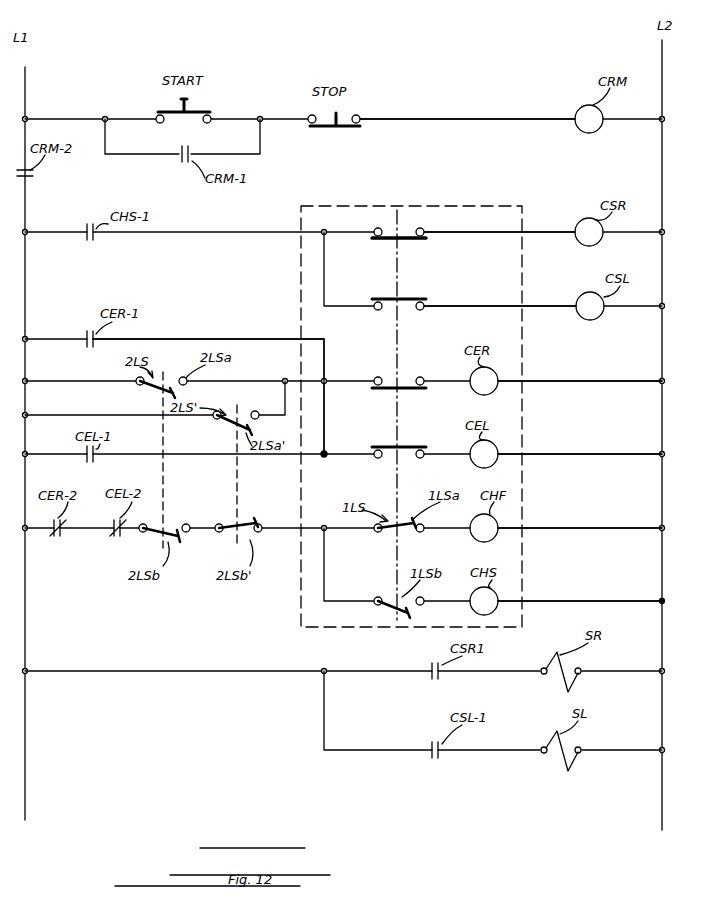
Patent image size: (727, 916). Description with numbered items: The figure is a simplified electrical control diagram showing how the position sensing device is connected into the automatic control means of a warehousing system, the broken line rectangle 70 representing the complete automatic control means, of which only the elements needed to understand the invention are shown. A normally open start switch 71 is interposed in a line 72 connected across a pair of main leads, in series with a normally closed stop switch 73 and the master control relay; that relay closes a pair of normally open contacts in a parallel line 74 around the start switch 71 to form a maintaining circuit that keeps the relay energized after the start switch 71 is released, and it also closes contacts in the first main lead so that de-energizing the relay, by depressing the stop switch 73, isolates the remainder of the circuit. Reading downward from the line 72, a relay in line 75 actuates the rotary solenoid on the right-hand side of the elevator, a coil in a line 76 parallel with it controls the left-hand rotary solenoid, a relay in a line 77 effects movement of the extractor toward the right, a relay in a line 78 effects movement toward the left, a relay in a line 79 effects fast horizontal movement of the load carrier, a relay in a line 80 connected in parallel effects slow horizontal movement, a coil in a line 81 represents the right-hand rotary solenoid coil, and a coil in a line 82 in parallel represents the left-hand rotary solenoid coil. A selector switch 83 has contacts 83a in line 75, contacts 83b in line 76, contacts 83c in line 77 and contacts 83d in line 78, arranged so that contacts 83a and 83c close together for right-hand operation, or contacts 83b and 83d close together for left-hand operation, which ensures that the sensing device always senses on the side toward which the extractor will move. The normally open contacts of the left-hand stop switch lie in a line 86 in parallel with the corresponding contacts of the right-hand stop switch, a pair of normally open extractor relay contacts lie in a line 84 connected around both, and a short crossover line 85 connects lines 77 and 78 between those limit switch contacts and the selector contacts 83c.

The broken line rectangle 70 is at (449, 206).
The start switch 71 is at (186, 104).
The line 72 is at (484, 108).
The stop switch 73 is at (338, 112).
The parallel line 74 is at (124, 155).
The line 75 is at (476, 232).
The line 76 is at (480, 306).
The line 77 is at (597, 381).
The line 78 is at (597, 454).
The line 79 is at (597, 528).
The line 80 is at (594, 601).
The line 81 is at (620, 671).
The line 82 is at (620, 750).
The selector switch 83 is at (381, 230).
The contacts 83a is at (412, 240).
The contacts 83b is at (373, 302).
The contacts 83c is at (373, 378).
The contacts 83d is at (373, 451).
The line 84 is at (217, 339).
The short crossover line 85 is at (327, 402).
The line 86 is at (108, 412).